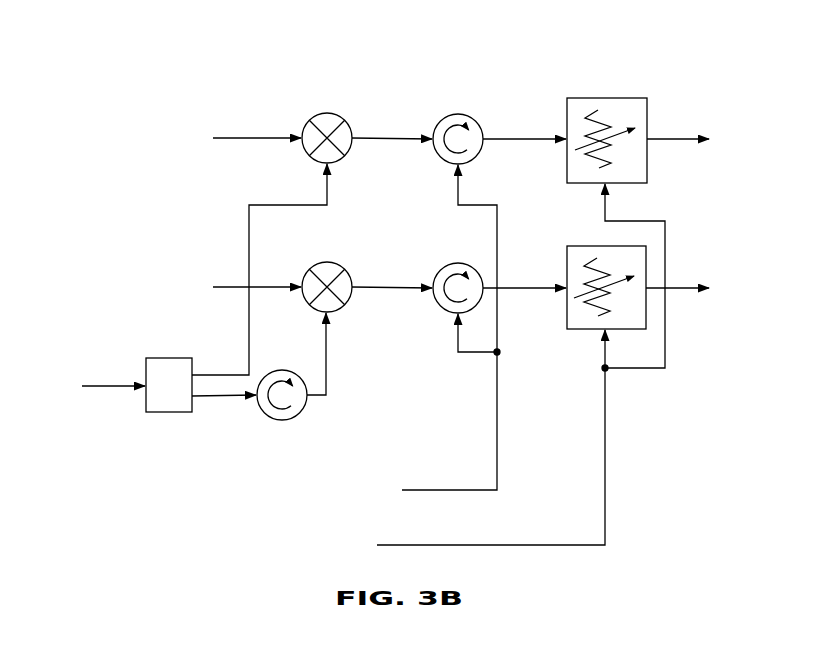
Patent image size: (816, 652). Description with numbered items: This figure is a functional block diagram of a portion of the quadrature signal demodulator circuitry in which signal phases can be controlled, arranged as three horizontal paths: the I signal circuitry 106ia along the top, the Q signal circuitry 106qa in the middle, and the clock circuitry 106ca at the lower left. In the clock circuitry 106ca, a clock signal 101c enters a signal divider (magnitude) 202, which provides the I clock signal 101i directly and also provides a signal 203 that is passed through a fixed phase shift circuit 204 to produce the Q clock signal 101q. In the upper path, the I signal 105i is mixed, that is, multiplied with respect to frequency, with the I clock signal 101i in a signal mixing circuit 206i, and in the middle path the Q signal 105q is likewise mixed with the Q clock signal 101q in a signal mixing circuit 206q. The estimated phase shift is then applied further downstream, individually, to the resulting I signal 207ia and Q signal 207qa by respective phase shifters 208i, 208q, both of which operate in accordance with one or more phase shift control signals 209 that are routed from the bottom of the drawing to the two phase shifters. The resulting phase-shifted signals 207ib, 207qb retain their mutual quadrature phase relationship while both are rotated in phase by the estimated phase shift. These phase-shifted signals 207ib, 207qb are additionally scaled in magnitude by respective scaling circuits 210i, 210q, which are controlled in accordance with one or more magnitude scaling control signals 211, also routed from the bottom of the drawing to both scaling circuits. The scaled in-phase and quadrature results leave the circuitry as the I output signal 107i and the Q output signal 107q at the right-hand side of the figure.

The I signal circuitry 106ia is at (368, 56).
The signal mixing circuit 206i is at (324, 112).
The I signal 105i is at (262, 135).
The I signal 207ia is at (398, 135).
The phase shifter 208i is at (456, 113).
The phase-shifted signal 207ib is at (524, 135).
The scaling circuit 210i is at (612, 97).
The I output signal 107i is at (670, 137).
The signal mixing circuit 206q is at (322, 262).
The Q signal 105q is at (225, 285).
The Q signal 207qa is at (400, 285).
The phase shifter 208q is at (455, 262).
The phase-shifted signal 207qb is at (540, 285).
The scaling circuit 210q is at (574, 331).
The Q output signal 107q is at (676, 286).
The signal divider (magnitude) 202 is at (168, 357).
The clock signal 101c is at (115, 384).
The I clock signal 101i is at (270, 200).
The signal 203 is at (200, 398).
The fixed phase shift circuit 204 is at (302, 404).
The Q clock signal 101q is at (328, 358).
The clock circuitry 106ca is at (258, 437).
The phase shift control signal 209 is at (440, 488).
The magnitude scaling control signal 211 is at (410, 543).
The Q signal circuitry 106qa is at (525, 395).